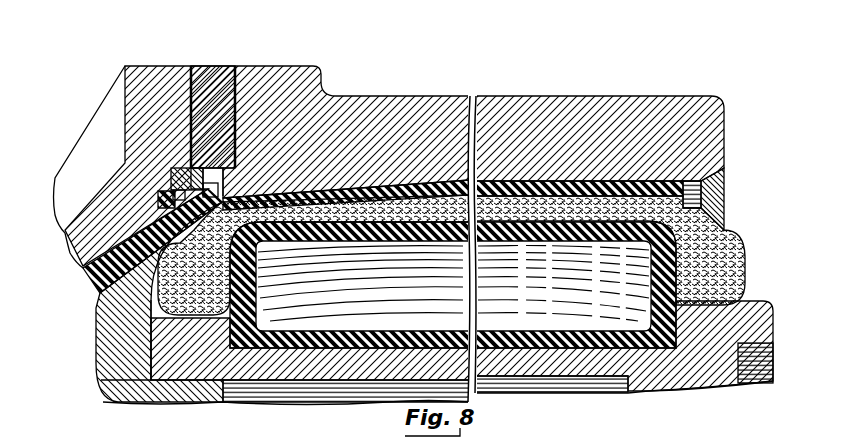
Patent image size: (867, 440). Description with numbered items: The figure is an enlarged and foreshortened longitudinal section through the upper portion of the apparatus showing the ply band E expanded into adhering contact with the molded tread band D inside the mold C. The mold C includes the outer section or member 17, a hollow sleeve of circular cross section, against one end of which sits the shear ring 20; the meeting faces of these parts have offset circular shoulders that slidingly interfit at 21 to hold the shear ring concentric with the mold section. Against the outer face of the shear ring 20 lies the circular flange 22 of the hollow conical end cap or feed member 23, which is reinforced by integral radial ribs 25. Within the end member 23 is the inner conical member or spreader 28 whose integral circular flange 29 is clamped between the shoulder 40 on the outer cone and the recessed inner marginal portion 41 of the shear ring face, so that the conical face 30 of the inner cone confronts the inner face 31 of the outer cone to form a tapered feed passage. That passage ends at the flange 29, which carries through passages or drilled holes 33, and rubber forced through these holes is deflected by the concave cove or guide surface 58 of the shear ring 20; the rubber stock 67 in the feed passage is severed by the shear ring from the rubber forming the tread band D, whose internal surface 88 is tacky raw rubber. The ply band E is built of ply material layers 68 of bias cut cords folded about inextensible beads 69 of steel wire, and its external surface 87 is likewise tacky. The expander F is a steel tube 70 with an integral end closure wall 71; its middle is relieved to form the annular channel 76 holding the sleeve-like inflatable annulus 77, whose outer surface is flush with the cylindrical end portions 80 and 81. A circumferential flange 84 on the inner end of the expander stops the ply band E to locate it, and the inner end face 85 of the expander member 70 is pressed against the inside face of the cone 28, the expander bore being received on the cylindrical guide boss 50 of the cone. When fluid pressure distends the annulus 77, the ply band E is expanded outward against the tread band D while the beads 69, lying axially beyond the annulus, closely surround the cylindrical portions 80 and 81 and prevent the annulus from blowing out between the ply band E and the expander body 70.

The outer section or member 17 is at (380, 88).
The shear ring 20 is at (212, 58).
The interfitting shoulders 21 is at (228, 172).
The circular flange 22 is at (149, 60).
The conical end cap or feed member 23 is at (65, 245).
The radial ribs 25 is at (97, 100).
The inner conical member or spreader 28 is at (100, 356).
The circular flange 29 is at (177, 160).
The conical face 30 is at (159, 302).
The inner face 31 is at (110, 213).
The through passages or drilled holes 33 is at (170, 190).
The shoulder 40 is at (168, 166).
The recess 41 is at (190, 170).
The cylindrical guide boss 50 is at (190, 380).
The concave cove or guide surface 58 is at (218, 184).
The rubber stock 67 is at (85, 280).
The ply material layers 68 is at (565, 175).
The inextensible beads 69 is at (453, 284).
The expander tube 70 is at (590, 375).
The end closure wall 71 is at (720, 365).
The annular channel 76 is at (355, 333).
The inflatable annulus 77 is at (548, 248).
The cylindrical end portion 80 is at (448, 287).
The cylindrical end portion 81 is at (752, 295).
The circumferential flange 84 is at (133, 340).
The inner end face 85 is at (143, 358).
The external surface 87 is at (399, 180).
The internal surface 88 is at (338, 190).
The mold C is at (652, 88).
The tread band D is at (515, 173).
The ply band E is at (705, 205).
The expander F is at (767, 320).